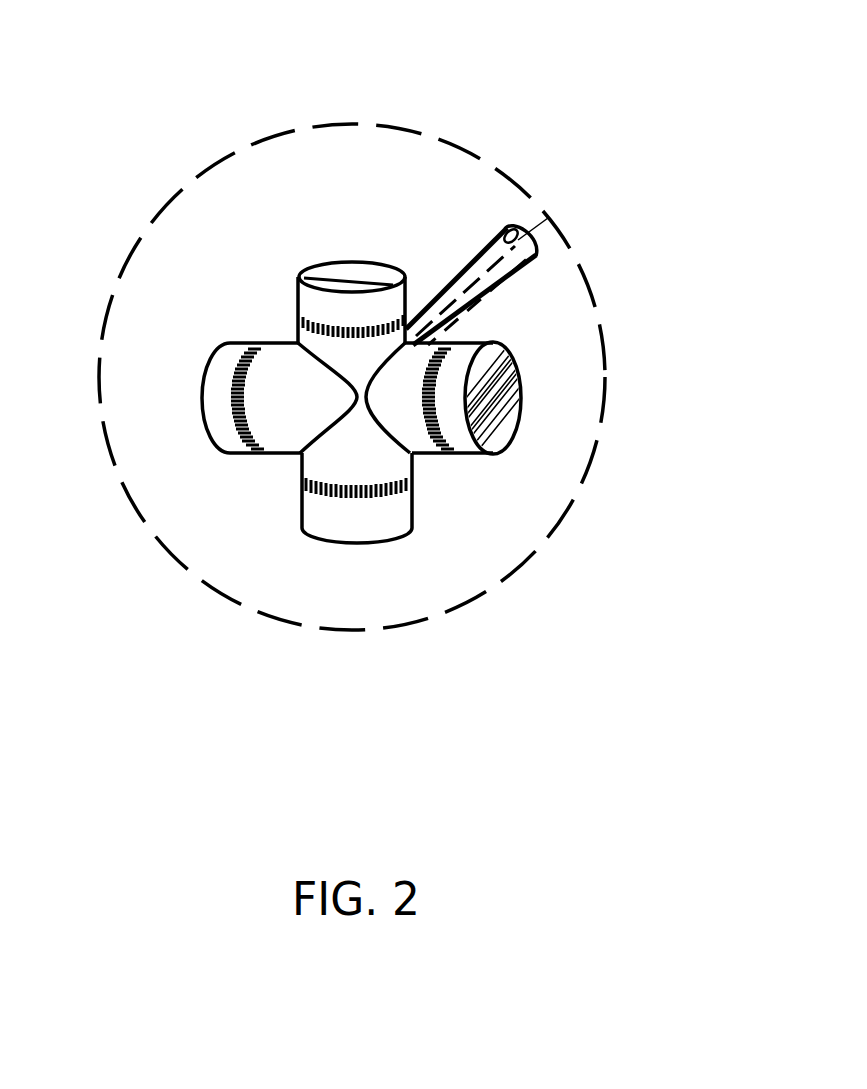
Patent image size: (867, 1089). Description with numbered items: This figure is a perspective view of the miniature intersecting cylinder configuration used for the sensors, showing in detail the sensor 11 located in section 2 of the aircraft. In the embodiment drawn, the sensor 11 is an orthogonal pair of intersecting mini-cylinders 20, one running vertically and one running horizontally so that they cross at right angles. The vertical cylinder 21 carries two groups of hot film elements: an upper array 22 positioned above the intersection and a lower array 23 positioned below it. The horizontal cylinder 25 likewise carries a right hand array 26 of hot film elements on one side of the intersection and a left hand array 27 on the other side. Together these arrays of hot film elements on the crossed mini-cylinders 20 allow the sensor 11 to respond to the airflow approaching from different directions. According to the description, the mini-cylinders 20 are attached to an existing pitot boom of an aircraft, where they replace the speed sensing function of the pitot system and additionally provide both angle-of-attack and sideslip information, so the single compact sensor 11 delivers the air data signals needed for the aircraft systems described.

The section 2 is at (100, 383).
The sensor 11 is at (192, 143).
The intersecting mini-cylinders 20 is at (355, 400).
The vertical cylinder 21 is at (358, 272).
The upper array 22 is at (393, 313).
The lower array 23 is at (379, 493).
The horizontal cylinder 25 is at (517, 380).
The right hand array 26 is at (233, 418).
The left hand array 27 is at (453, 453).